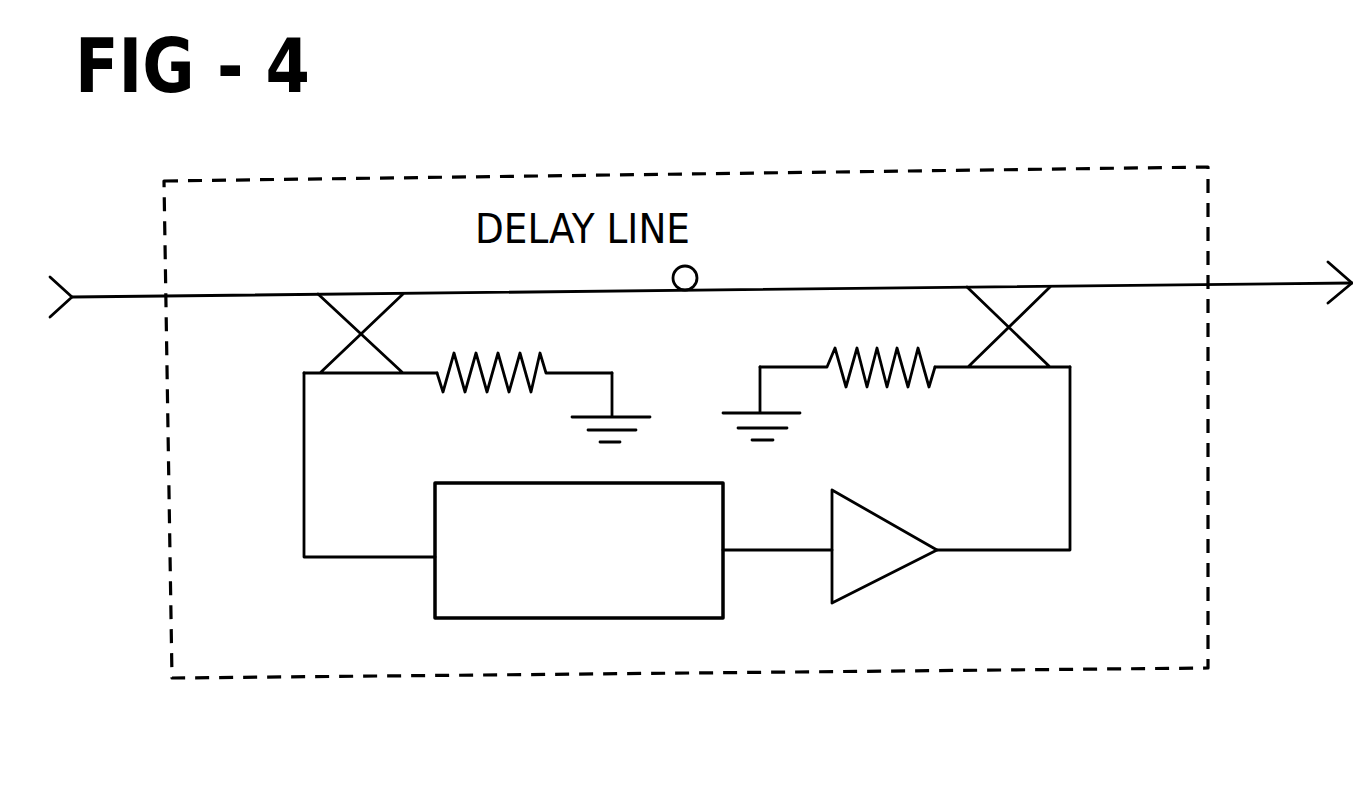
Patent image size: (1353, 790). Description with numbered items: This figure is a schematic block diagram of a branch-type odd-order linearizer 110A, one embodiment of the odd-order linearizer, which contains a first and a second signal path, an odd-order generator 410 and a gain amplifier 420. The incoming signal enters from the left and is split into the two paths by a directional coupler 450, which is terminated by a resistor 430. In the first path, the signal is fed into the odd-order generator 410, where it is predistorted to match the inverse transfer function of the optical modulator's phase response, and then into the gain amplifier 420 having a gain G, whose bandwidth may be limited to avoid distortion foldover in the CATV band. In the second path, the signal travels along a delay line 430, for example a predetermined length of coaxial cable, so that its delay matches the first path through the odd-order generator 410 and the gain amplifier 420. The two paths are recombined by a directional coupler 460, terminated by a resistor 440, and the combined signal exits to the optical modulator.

The branch-type odd-order linearizer 110A is at (857, 172).
The odd-order generator 410 is at (435, 590).
The gain amplifier 420 is at (893, 578).
The delay line 430 is at (503, 393).
The resistor 440 is at (886, 393).
The directional coupler 450 is at (377, 318).
The directional coupler 460 is at (1013, 287).